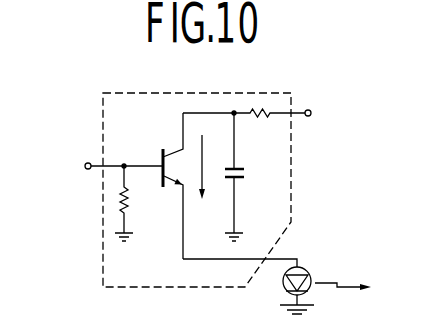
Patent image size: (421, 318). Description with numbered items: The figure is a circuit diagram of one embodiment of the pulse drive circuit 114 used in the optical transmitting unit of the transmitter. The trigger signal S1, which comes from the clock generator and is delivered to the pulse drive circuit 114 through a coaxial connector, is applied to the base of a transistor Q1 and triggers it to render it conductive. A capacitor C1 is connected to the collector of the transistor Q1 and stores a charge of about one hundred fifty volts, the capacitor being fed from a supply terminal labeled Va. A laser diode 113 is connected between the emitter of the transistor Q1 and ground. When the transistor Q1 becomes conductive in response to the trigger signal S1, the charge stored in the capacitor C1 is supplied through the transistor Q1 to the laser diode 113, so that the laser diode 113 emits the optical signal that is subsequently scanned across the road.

The laser diode 113 is at (306, 268).
The pulse drive circuit 114 is at (103, 105).
The transistor Q1 is at (162, 159).
The capacitor C1 is at (245, 177).
The trigger signal S1 is at (113, 166).
The supply voltage terminal Va is at (258, 113).